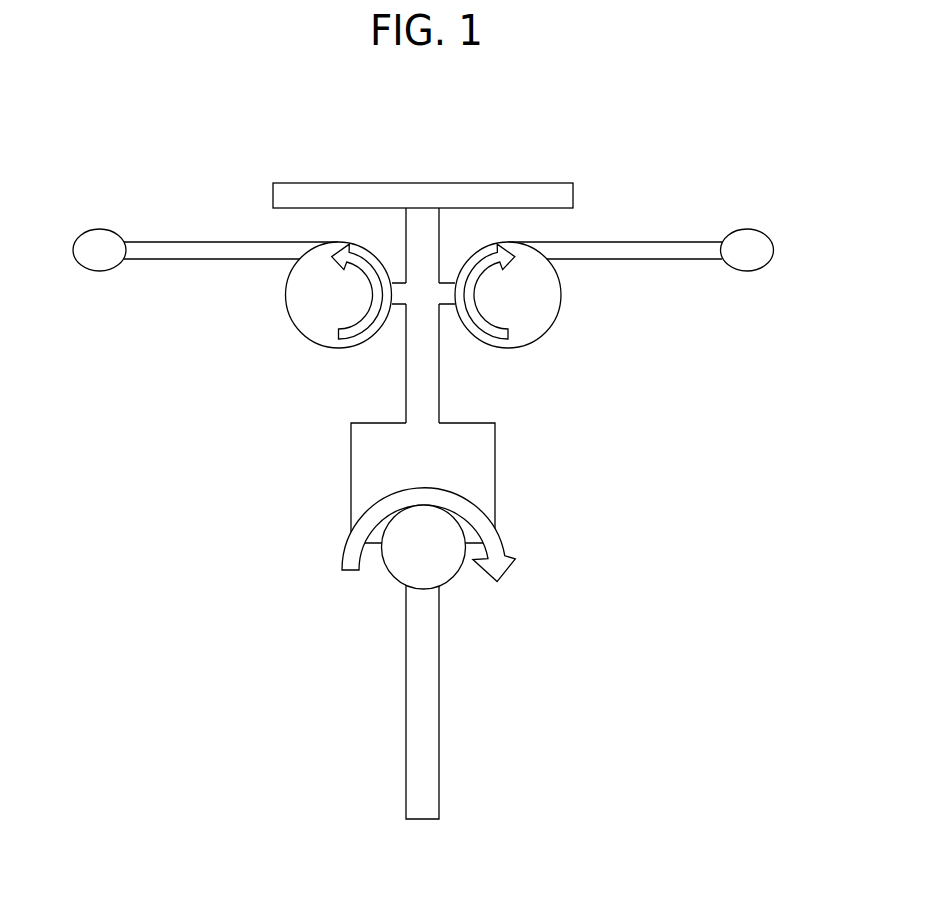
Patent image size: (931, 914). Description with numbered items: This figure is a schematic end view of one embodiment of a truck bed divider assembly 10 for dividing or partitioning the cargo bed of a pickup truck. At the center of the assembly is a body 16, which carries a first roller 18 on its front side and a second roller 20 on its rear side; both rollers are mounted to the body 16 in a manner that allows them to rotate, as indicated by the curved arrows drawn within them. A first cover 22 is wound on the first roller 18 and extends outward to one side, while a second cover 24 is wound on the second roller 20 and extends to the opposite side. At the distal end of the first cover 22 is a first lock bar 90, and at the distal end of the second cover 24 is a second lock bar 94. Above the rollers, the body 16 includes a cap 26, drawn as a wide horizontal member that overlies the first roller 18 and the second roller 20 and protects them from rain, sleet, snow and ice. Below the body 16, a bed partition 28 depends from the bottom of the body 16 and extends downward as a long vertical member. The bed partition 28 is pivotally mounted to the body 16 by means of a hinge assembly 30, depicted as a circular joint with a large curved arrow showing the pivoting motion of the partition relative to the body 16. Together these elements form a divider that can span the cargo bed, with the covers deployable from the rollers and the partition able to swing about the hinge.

The truck bed divider assembly 10 is at (603, 147).
The body 16 is at (413, 372).
The first roller 18 is at (290, 318).
The second roller 20 is at (545, 332).
The first cover 22 is at (177, 242).
The second cover 24 is at (655, 242).
The cap 26 is at (367, 188).
The bed partition 28 is at (432, 729).
The hinge assembly 30 is at (403, 562).
The first lock bar 90 is at (90, 272).
The second lock bar 94 is at (755, 271).